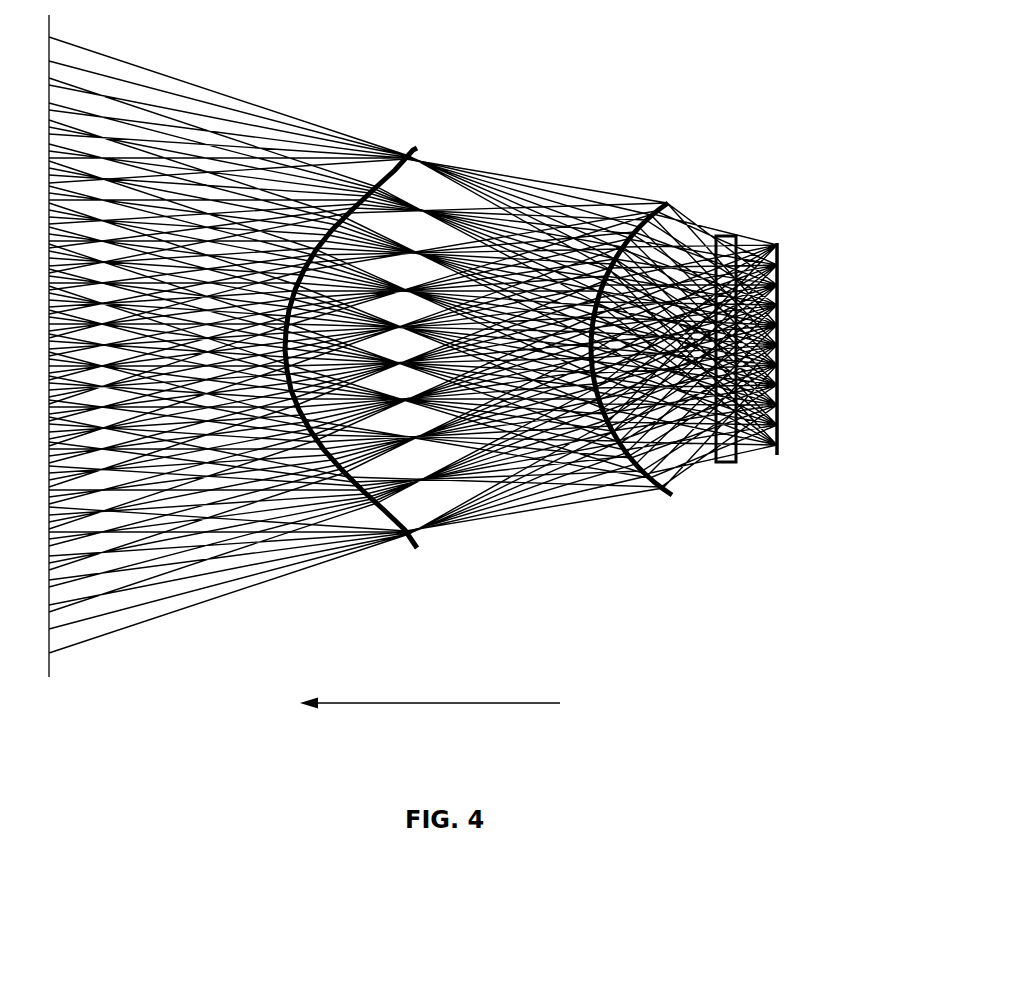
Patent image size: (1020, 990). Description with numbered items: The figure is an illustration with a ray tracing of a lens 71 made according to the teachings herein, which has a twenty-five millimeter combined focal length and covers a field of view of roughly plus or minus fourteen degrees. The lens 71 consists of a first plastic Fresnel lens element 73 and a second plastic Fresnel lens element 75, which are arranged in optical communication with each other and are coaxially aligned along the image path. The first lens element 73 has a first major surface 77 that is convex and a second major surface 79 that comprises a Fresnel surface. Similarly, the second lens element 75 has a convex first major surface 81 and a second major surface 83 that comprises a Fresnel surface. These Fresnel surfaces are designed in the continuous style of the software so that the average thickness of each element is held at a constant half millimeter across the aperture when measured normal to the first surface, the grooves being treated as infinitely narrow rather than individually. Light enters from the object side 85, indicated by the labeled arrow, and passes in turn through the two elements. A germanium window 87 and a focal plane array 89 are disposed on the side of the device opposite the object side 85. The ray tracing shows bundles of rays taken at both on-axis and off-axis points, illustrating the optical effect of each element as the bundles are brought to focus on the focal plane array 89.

The lens 71 is at (606, 58).
The first plastic Fresnel lens element 73 is at (417, 150).
The second plastic Fresnel lens element 75 is at (664, 204).
The first major surface 77 is at (395, 172).
The second major surface 79 is at (420, 546).
The first major surface 81 is at (635, 203).
The second major surface 83 is at (670, 492).
The object side 85 is at (262, 756).
The germanium window 87 is at (737, 237).
The focal plane array 89 is at (781, 332).